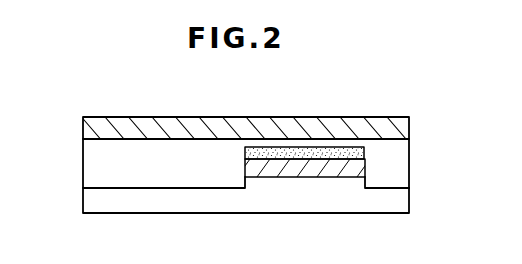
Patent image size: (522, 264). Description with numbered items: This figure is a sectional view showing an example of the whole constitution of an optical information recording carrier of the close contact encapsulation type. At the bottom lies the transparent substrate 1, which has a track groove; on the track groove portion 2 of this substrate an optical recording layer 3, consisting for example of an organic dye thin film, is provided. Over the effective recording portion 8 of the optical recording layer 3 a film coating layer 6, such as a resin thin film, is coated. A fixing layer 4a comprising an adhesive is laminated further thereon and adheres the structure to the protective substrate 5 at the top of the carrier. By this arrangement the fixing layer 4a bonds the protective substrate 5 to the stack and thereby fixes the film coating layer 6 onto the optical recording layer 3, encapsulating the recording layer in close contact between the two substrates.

The transparent substrate 1 is at (90, 202).
The track groove portion 2 is at (357, 187).
The optical recording layer 3 is at (365, 172).
The fixing layer 4a is at (90, 168).
The protective substrate 5 is at (407, 129).
The film coating layer 6 is at (365, 152).
The effective recording portion 8 is at (303, 172).